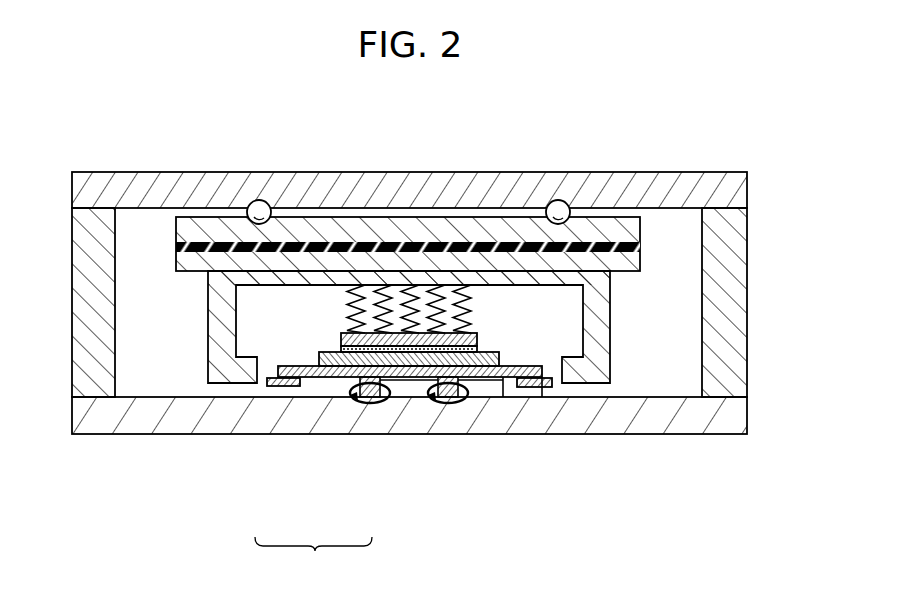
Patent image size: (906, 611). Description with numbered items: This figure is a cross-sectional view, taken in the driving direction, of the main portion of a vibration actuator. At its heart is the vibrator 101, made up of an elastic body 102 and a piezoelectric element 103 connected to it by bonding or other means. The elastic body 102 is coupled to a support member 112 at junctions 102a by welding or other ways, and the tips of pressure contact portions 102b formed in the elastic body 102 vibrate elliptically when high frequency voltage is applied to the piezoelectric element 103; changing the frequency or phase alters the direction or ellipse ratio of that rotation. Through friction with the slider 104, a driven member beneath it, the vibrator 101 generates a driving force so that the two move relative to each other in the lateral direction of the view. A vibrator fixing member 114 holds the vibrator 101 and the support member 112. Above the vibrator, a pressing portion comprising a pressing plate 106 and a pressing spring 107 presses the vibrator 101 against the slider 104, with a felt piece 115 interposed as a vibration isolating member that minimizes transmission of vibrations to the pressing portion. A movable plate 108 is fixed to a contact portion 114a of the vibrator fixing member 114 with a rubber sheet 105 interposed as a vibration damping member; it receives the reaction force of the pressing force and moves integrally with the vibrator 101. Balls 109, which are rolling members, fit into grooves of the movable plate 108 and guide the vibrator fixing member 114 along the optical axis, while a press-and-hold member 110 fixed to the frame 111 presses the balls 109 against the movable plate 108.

The vibrator 101 is at (313, 557).
The elastic body 102 is at (320, 374).
The junctions 102a is at (503, 382).
The pressure contact portions 102b is at (445, 404).
The piezoelectric element 103 is at (325, 360).
The slider 104 is at (681, 428).
The rubber sheet 105 is at (640, 247).
The pressing plate 106 is at (338, 331).
The pressing spring 107 is at (468, 311).
The movable plate 108 is at (628, 230).
The balls 109 is at (256, 203).
The press-and-hold member 110 is at (627, 192).
The frame 111 is at (97, 218).
The support member 112 is at (270, 386).
The vibrator fixing member 114 is at (600, 347).
The contact portion 114a is at (636, 266).
The felt piece 115 is at (340, 350).